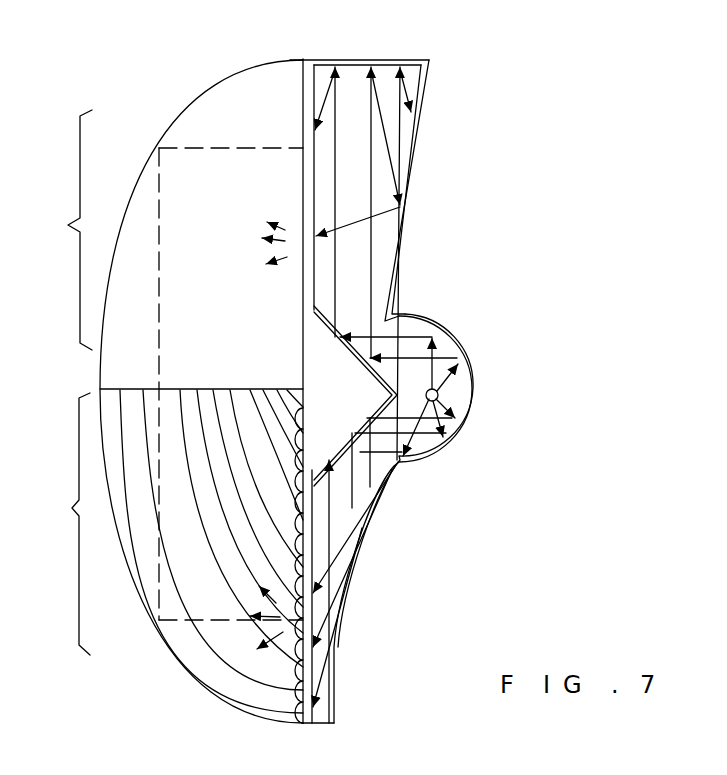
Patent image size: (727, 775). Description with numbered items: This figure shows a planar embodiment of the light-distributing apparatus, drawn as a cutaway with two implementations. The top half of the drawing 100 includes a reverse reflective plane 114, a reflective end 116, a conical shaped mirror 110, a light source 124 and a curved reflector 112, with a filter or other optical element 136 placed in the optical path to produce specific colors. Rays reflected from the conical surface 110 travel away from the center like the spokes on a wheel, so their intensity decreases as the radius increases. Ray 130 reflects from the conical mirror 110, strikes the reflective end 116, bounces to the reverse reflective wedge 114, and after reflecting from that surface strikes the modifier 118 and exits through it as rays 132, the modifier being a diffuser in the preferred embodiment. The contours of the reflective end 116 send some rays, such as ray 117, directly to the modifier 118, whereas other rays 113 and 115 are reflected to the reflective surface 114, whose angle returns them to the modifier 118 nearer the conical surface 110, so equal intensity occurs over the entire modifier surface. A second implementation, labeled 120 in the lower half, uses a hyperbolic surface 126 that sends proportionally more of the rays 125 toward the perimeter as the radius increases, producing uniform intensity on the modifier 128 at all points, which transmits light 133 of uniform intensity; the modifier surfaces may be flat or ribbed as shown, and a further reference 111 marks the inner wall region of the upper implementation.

The top half of the drawing 100 is at (343, 352).
The conical shaped mirror 110 is at (316, 312).
The inner wall 111 is at (343, 100).
The curved reflector 112 is at (452, 442).
The ray 113 is at (408, 108).
The reverse reflective plane 114 is at (427, 90).
The ray 115 is at (393, 123).
The reflective end 116 is at (375, 67).
The ray 117 is at (328, 93).
The modifier 118 is at (303, 97).
The lens section 120 is at (430, 309).
The light source 124 is at (440, 393).
The rays 125 is at (330, 522).
The hyperbolic surface 126 is at (352, 572).
The modifier 128 is at (280, 698).
The ray 130 is at (450, 358).
The rays 132 is at (278, 218).
The light intensity 133 is at (267, 670).
The filter 136 is at (437, 322).